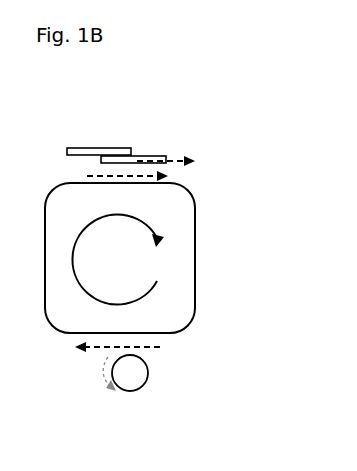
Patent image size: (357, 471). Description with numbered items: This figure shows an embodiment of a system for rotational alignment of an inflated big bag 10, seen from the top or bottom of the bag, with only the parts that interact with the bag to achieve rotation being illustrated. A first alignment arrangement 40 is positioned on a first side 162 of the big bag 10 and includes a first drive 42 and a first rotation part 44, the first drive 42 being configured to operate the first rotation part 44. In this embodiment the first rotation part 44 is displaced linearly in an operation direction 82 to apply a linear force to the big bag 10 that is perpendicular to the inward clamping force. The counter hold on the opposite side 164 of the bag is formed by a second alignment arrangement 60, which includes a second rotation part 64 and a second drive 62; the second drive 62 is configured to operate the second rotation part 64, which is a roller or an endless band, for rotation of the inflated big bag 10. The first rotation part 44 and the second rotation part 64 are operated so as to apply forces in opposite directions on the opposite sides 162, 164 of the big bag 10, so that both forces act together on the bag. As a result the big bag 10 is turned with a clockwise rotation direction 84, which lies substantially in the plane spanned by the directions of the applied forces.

The inflated big bag 10 is at (195, 239).
The rotation direction 84 is at (100, 220).
The first alignment arrangement 40 is at (103, 117).
The first drive 42 is at (97, 148).
The first rotation part 44 is at (147, 156).
The operation direction 82 is at (193, 158).
The first side of the big bag 162 is at (61, 180).
The second side of the big bag 164 is at (168, 337).
The second alignment arrangement 60 is at (112, 406).
The second drive 62 is at (112, 406).
The second rotation part 64 is at (128, 391).